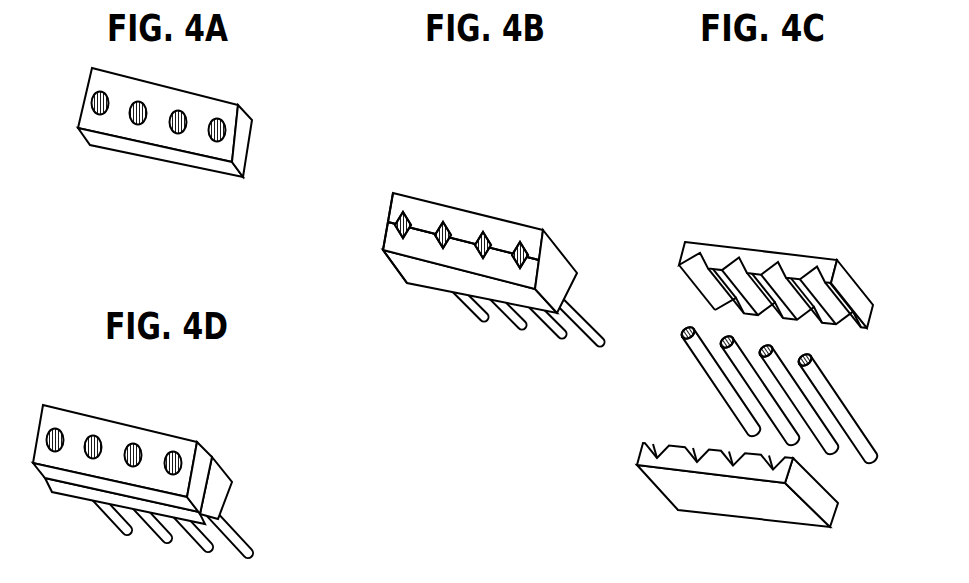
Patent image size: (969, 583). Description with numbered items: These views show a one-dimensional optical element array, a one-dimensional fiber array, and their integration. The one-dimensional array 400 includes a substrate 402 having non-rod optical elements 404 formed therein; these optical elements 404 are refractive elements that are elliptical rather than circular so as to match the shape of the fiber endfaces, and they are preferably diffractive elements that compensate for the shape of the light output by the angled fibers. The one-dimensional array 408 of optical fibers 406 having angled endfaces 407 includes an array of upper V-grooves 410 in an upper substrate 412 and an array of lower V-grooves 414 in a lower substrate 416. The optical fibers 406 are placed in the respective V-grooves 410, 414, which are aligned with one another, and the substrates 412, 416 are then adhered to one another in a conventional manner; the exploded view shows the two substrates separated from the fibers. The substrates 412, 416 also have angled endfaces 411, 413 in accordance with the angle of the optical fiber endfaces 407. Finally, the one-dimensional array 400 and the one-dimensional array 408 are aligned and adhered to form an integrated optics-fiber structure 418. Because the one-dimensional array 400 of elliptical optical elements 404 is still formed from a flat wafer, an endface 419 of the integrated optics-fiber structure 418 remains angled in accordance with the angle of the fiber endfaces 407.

In FIG. 4A, the one-dimensional array 400 is at (210, 110).
In FIG. 4D, the one-dimensional array 400 is at (145, 434).
In FIG. 4A, the substrate 402 is at (252, 147).
In FIG. 4A, the non-rod optical elements 404 is at (220, 117).
In FIG. 4B, the optical fibers 406 is at (587, 318).
In FIG. 4C, the optical fibers 406 is at (790, 392).
In FIG. 4B, the angled endfaces 407 is at (541, 236).
In FIG. 4C, the angled endfaces 407 is at (813, 352).
In FIG. 4D, the one-dimensional array of optical fibers 408 is at (234, 474).
In FIG. 4B, the one-dimensional array of optical fibers 408 is at (473, 246).
In FIG. 4C, the one-dimensional array of optical fibers 408 is at (745, 353).
In FIG. 4B, the upper V-grooves 410 is at (481, 236).
In FIG. 4C, the upper V-grooves 410 is at (702, 252).
In FIG. 4B, the angled endface 411 is at (406, 283).
In FIG. 4B, the upper substrate 412 is at (421, 199).
In FIG. 4C, the upper substrate 412 is at (776, 254).
In FIG. 4B, the angled endface 413 is at (391, 212).
In FIG. 4B, the lower V-grooves 414 is at (386, 252).
In FIG. 4C, the lower V-grooves 414 is at (659, 444).
In FIG. 4B, the lower substrate 416 is at (406, 283).
In FIG. 4C, the lower substrate 416 is at (714, 464).
In FIG. 4D, the integrated optics-fiber structure 418 is at (208, 446).
In FIG. 4D, the endface 419 is at (115, 430).